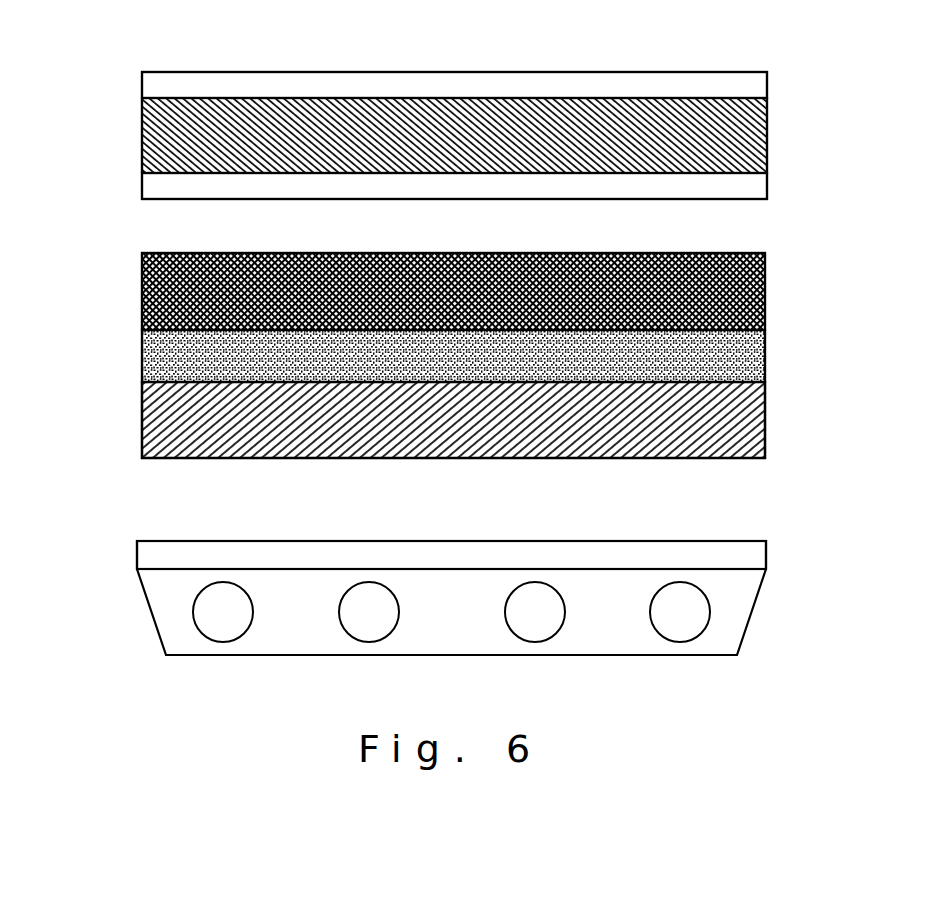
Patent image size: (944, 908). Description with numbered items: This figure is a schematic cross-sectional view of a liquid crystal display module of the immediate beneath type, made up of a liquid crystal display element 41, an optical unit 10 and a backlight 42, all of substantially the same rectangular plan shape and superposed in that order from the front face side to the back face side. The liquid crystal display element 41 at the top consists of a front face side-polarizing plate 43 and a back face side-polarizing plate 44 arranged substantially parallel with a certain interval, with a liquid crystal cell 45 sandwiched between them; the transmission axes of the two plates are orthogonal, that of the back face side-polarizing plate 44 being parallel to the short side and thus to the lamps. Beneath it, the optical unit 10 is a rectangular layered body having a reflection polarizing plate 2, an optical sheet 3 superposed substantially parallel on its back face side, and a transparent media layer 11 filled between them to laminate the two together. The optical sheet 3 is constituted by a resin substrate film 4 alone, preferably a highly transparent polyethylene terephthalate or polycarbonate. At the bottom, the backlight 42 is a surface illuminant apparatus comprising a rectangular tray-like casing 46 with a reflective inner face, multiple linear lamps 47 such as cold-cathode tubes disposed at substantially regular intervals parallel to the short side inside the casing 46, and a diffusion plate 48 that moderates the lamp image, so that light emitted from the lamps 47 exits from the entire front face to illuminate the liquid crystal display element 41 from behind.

The liquid crystal display element 41 is at (125, 93).
The front face side-polarizing plate 43 is at (768, 82).
The liquid crystal cell 45 is at (768, 130).
The back face side-polarizing plate 44 is at (768, 183).
The optical unit 10 is at (125, 253).
The reflection polarizing plate 2 is at (767, 288).
The transparent media layer 11 is at (767, 350).
The substrate film 4 is at (767, 417).
The optical sheet 3 is at (130, 417).
The backlight 42 is at (451, 566).
The diffusion plate 48 is at (266, 557).
The lamp 47 is at (535, 606).
The casing 46 is at (752, 614).